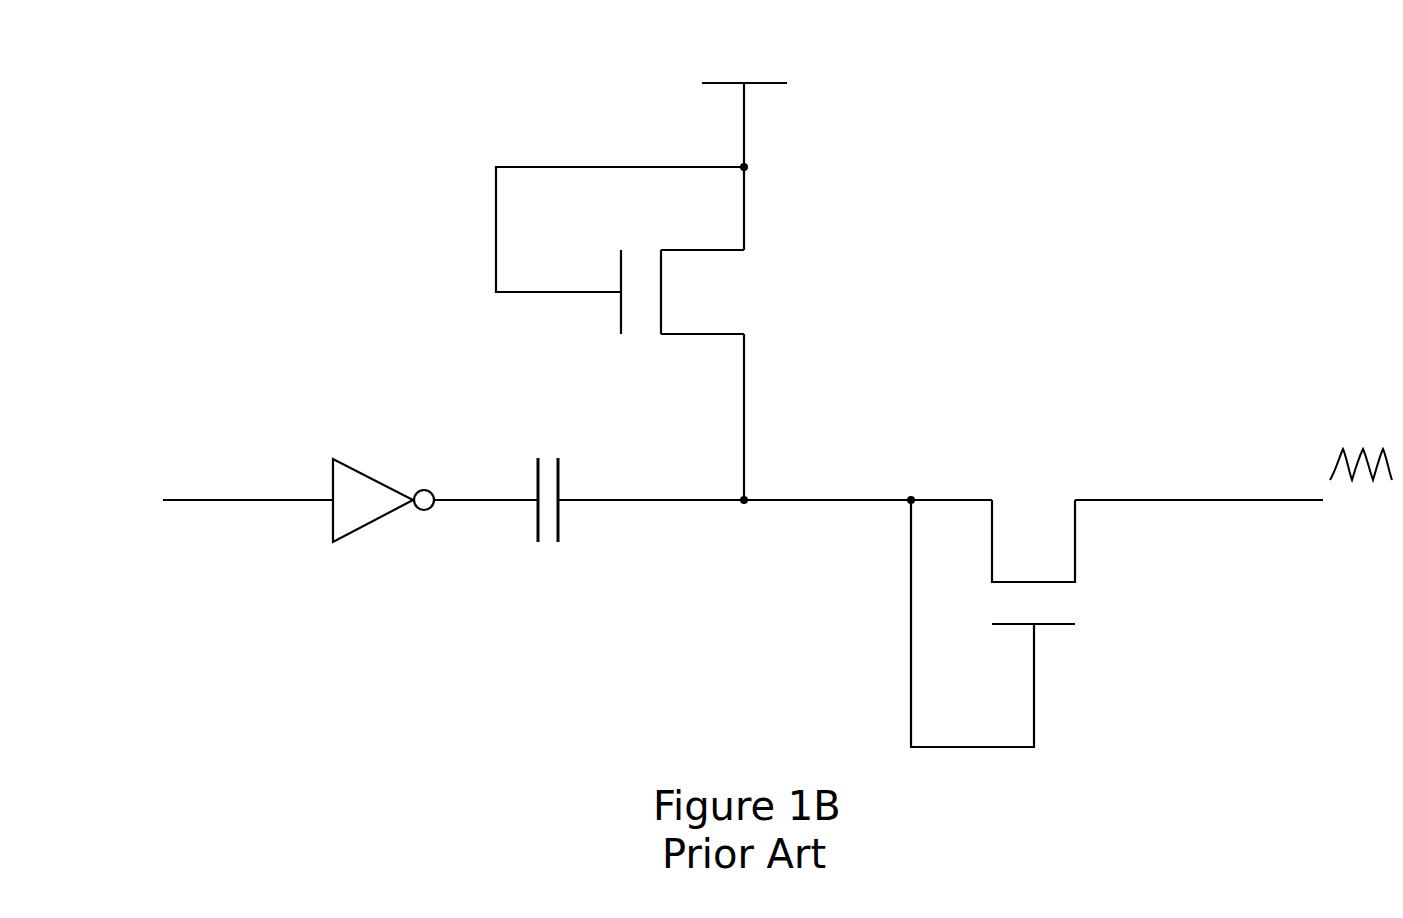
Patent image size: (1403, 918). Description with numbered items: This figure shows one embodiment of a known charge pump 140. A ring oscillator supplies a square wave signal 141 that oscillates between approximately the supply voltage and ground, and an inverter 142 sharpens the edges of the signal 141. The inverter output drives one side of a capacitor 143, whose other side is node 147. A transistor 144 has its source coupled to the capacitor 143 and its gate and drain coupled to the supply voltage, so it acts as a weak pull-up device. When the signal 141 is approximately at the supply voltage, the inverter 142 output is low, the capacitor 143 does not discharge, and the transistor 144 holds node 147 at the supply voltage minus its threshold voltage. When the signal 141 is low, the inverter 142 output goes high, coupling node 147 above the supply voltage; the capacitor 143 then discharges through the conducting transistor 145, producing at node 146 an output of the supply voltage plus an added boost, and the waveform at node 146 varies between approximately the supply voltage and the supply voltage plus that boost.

The pump 140 is at (933, 192).
The square wave signal 141 is at (217, 502).
The inverter 142 is at (373, 525).
The capacitor 143 is at (556, 438).
The transistor 144 is at (620, 333).
The transistor 145 is at (991, 621).
The node 146 is at (1233, 482).
The node 147 is at (818, 519).